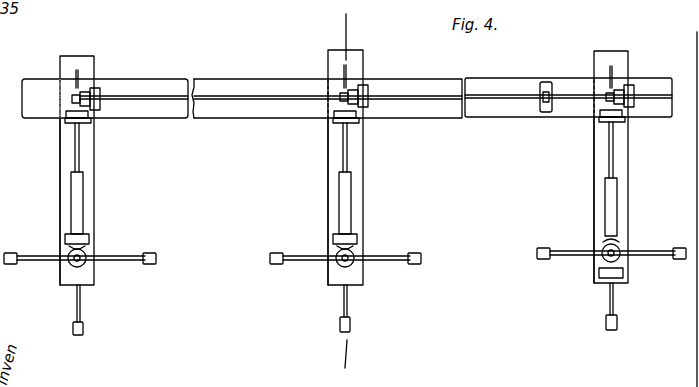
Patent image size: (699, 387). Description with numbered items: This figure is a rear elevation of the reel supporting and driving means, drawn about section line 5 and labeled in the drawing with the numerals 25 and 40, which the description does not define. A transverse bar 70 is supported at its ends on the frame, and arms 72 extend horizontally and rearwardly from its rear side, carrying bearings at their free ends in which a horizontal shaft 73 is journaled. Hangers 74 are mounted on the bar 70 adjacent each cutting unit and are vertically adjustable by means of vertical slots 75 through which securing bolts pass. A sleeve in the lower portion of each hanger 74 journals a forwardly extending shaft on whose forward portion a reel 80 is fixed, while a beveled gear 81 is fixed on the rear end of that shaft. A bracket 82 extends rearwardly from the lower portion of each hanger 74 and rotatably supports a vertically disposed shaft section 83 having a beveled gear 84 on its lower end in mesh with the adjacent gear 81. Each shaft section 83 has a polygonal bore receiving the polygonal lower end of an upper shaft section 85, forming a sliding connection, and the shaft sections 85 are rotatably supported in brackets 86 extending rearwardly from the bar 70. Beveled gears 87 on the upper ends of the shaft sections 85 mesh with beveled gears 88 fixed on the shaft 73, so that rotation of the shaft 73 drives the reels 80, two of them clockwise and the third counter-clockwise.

The section line 5 is at (344, 193).
The frame 25 is at (568, 58).
The support 40 is at (286, 2).
The transverse bar 70 is at (152, 85).
The arms 72 is at (100, 96).
The horizontal shaft 73 is at (252, 118).
The hangers 74 is at (60, 150).
The vertical slots 75 is at (75, 70).
The reel 80 is at (150, 250).
The beveled gear 81 is at (84, 265).
The bracket 82 is at (65, 238).
The shaft section 83 is at (71, 200).
The beveled gear 84 is at (88, 256).
The shaft section 85 is at (79, 142).
The brackets 86 is at (91, 122).
The beveled gears 87 is at (68, 110).
The beveled gears 88 is at (95, 88).